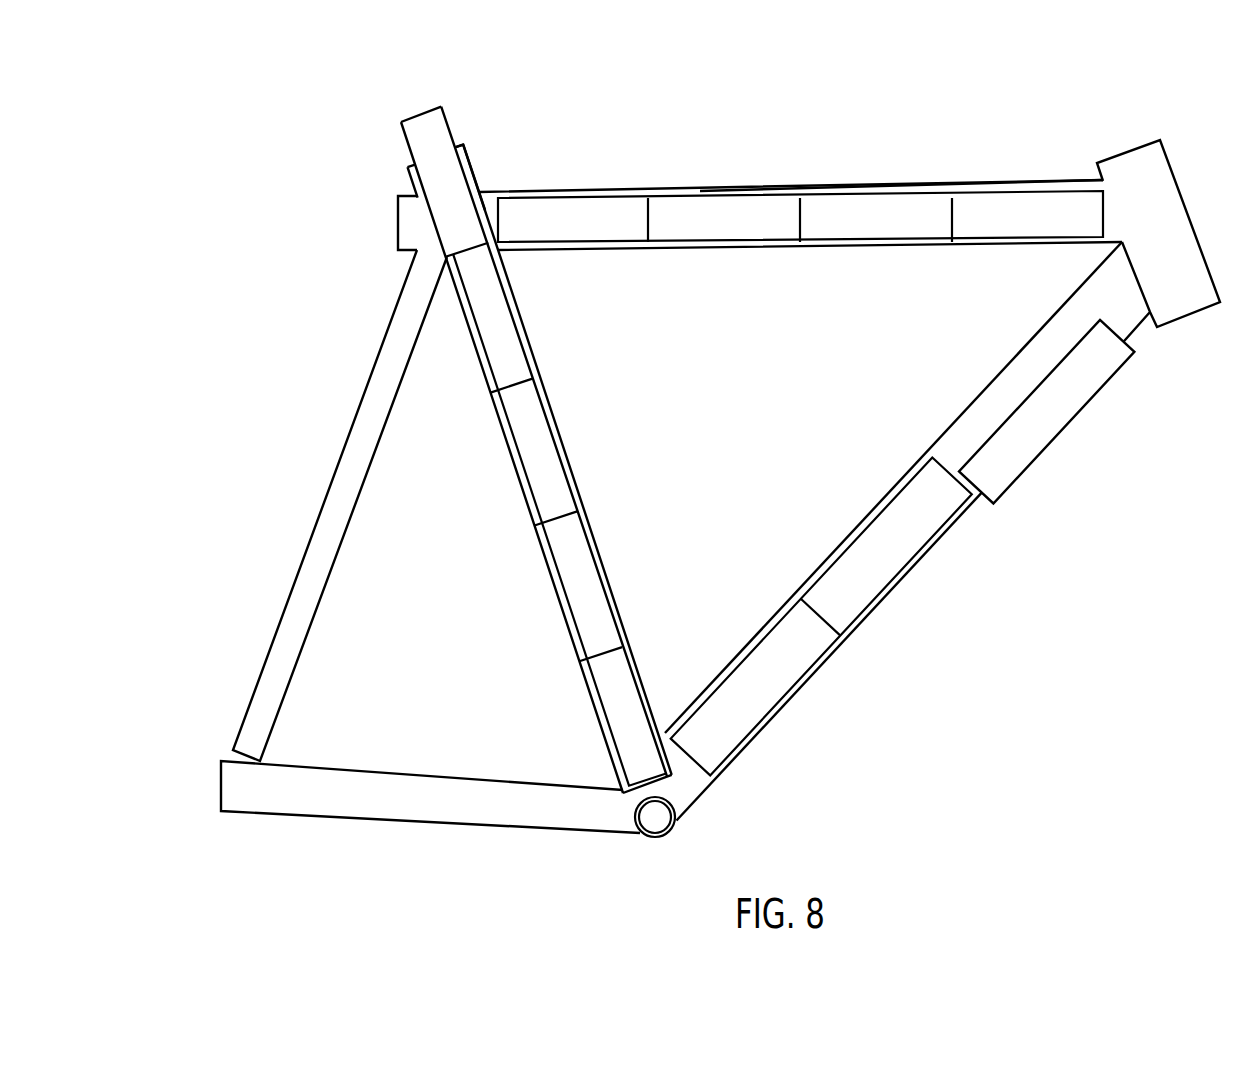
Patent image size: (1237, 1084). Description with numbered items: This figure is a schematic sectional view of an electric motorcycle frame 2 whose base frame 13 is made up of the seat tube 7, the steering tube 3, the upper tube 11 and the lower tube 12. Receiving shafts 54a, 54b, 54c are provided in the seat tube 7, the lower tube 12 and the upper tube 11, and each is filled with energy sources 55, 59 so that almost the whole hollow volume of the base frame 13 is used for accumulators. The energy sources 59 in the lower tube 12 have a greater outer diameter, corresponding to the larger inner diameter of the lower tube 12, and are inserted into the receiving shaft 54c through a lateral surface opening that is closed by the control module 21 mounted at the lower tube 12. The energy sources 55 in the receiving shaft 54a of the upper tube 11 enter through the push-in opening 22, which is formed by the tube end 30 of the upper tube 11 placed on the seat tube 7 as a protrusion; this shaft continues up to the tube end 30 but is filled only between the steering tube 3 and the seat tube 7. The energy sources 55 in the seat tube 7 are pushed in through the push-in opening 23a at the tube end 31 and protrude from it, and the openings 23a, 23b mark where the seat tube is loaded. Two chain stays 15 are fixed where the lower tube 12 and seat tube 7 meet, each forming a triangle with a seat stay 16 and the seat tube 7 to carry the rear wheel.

The frame 2 is at (838, 183).
The steering tube 3 is at (1171, 247).
The seat tube 7 is at (590, 524).
The upper tube 11 is at (930, 190).
The lower tube 12 is at (903, 582).
The base frame 13 is at (945, 555).
The chain stay 15 is at (414, 822).
The seat stay 16 is at (333, 569).
The control module 21 is at (1097, 386).
The push-in opening 22 is at (392, 241).
The push-in opening 23a is at (459, 136).
The tube layer 23b is at (459, 136).
The tube end 30 is at (406, 188).
The tube end 31 is at (473, 162).
The receiving shaft 54a is at (695, 191).
The receiving shaft 54b is at (548, 395).
The receiving shaft 54c is at (878, 503).
The energy source 55 is at (588, 236).
The energy source 59 is at (904, 555).